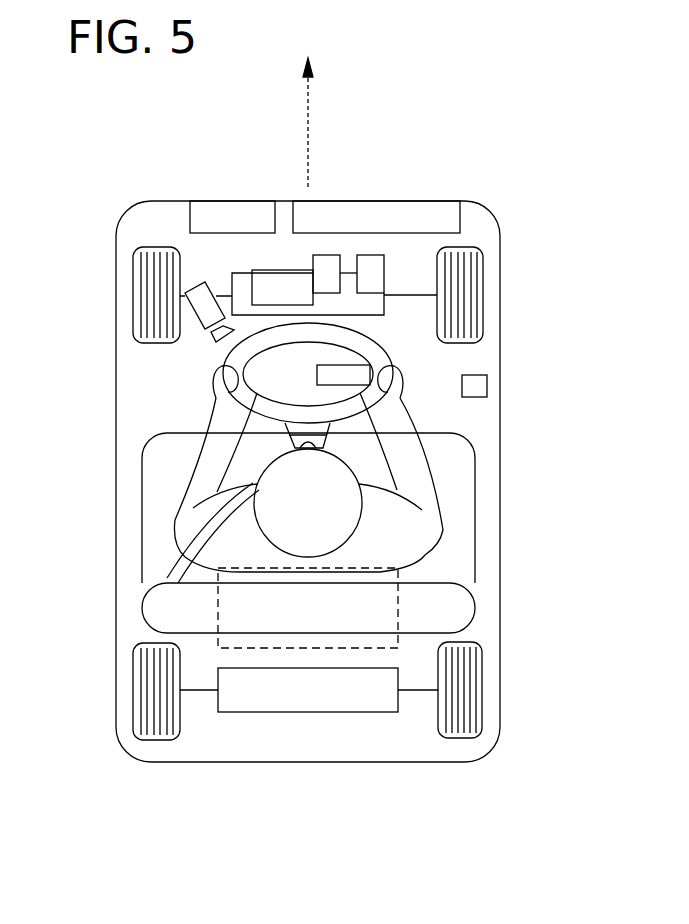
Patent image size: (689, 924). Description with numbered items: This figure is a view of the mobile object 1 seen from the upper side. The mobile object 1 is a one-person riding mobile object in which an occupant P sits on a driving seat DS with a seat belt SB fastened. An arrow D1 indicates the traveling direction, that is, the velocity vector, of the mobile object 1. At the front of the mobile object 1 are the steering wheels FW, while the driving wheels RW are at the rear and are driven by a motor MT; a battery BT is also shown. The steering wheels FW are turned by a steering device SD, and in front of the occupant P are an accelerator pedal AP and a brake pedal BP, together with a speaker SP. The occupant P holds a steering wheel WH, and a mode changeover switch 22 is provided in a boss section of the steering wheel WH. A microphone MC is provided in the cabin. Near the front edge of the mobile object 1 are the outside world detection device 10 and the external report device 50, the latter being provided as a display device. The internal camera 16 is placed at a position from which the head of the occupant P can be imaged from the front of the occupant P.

The mobile object 1 is at (500, 480).
The outside world detection device 10 is at (232, 201).
The internal camera 16 is at (192, 288).
The mode changeover switch 22 is at (345, 365).
The external report device 50 is at (460, 213).
The traveling direction D1 is at (322, 122).
The steering wheel FW is at (483, 293).
The driving wheel RW is at (482, 690).
The steering device SD is at (387, 303).
The speaker SP is at (292, 270).
The brake pedal BP is at (325, 255).
The accelerator pedal AP is at (370, 255).
The steering wheel WH is at (226, 361).
The microphone MC is at (487, 386).
The driving seat DS is at (142, 508).
The battery BT is at (397, 612).
The motor MT is at (308, 712).
The occupant P is at (443, 530).
The seat belt SB is at (163, 572).